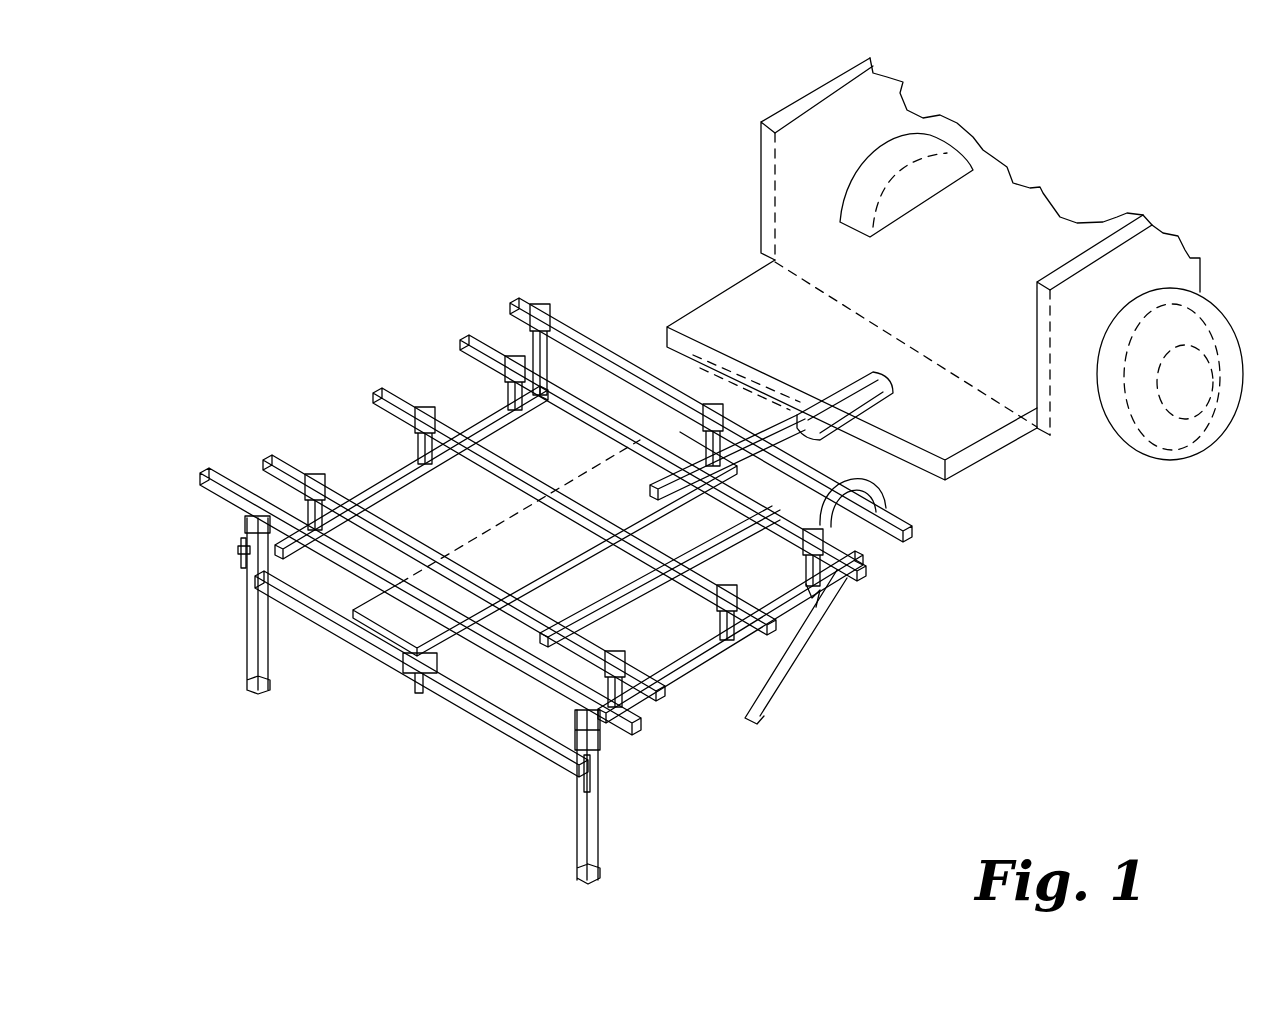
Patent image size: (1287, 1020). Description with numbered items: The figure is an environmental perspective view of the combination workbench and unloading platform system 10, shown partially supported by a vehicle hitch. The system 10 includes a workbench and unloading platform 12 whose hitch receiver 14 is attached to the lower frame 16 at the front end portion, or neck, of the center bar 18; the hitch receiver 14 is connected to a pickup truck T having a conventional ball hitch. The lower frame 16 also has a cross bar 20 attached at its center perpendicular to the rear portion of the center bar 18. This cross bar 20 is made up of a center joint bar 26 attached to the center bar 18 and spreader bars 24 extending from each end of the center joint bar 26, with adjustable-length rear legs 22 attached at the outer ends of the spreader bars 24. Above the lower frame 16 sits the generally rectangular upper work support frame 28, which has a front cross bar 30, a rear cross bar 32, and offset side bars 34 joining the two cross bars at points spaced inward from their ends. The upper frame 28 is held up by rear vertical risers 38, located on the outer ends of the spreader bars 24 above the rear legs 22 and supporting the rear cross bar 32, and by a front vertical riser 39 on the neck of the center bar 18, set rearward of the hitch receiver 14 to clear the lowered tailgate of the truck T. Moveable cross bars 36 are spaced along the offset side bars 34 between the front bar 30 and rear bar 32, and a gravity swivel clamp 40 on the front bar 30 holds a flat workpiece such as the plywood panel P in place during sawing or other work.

The combination workbench and unloading platform system 10 is at (345, 238).
The workbench and unloading platform 12 is at (583, 320).
The hitch receiver 14 is at (835, 355).
The lower frame 16 is at (398, 690).
The center bar 18 is at (545, 560).
The cross bar 20 is at (366, 674).
The rear legs 22 is at (250, 614).
The spreader bars 24 is at (312, 625).
The center joint bar 26 is at (425, 692).
The upper work support frame 28 is at (235, 456).
The front cross bar 30 is at (622, 360).
The rear cross bar 32 is at (240, 514).
The offset side bars 34 is at (477, 410).
The moveable cross bars 36 is at (497, 455).
The rear vertical risers 38 is at (262, 540).
The front vertical riser 39 is at (703, 450).
The gravity swivel clamp 40 is at (888, 562).
The pickup truck T is at (705, 138).
The plywood panel P is at (635, 612).